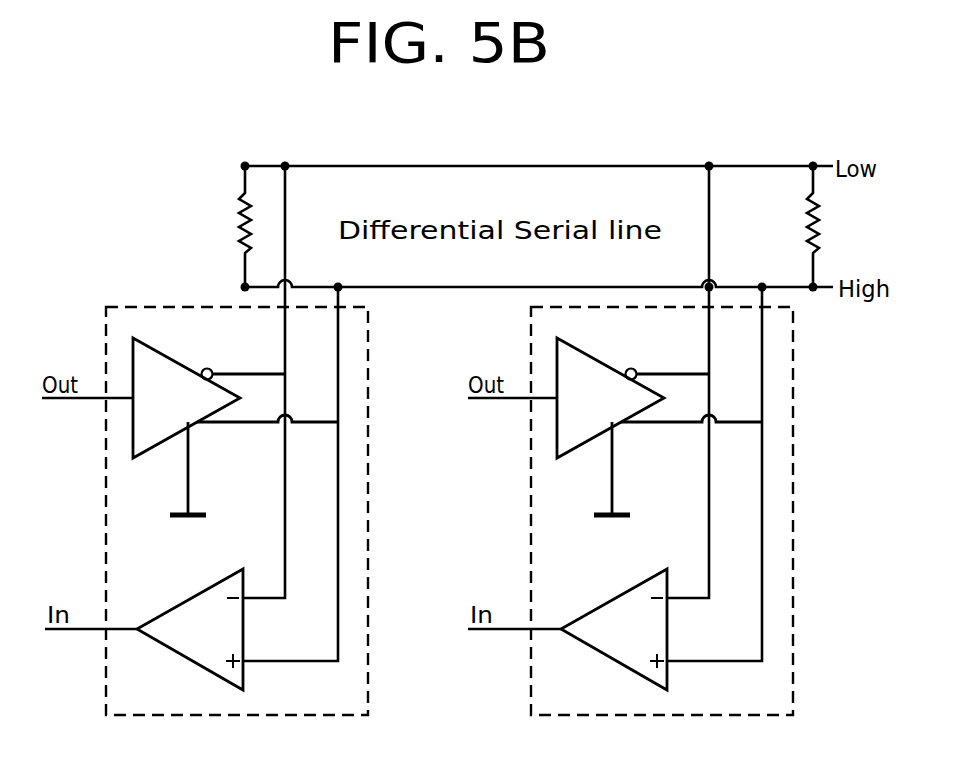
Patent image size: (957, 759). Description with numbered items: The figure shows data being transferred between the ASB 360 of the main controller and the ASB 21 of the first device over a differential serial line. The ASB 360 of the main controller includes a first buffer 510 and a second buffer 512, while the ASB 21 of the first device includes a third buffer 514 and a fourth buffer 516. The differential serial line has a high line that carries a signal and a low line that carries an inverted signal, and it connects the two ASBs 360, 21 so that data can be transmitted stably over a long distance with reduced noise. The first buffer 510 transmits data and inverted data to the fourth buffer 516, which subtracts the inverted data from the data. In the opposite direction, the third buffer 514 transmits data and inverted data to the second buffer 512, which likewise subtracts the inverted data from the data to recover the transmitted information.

The ASB of the main controller 360 is at (368, 510).
The ASB of the first device 21 is at (793, 508).
The first buffer 510 is at (223, 352).
The second buffer 512 is at (188, 596).
The third buffer 514 is at (612, 364).
The fourth buffer 516 is at (612, 596).